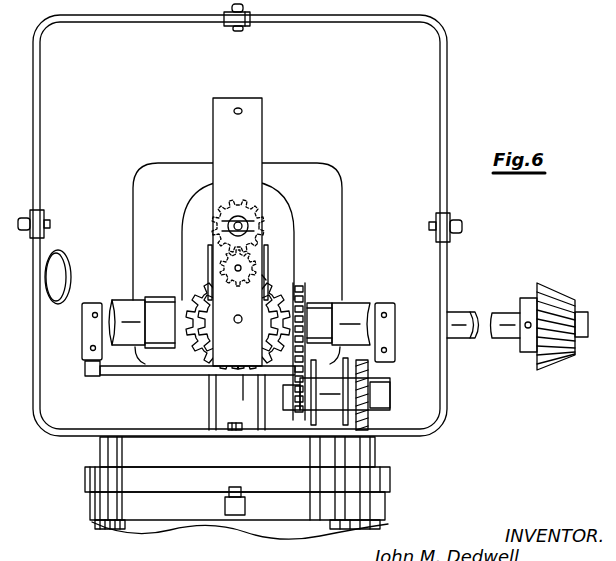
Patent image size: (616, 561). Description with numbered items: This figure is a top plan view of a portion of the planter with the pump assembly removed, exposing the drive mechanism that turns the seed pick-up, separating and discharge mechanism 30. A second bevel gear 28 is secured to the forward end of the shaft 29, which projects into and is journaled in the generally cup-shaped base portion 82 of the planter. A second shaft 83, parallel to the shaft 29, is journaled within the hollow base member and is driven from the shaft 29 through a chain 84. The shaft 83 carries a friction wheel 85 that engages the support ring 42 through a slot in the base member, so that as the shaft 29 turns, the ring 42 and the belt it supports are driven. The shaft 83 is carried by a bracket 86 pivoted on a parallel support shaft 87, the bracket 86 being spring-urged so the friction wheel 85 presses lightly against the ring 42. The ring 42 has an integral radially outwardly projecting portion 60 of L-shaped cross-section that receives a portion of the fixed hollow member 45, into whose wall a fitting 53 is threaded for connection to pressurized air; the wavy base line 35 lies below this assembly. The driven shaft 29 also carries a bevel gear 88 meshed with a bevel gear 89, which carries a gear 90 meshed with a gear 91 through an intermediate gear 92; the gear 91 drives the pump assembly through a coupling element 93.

The base portion 82 is at (440, 98).
The coupling element 93 is at (238, 215).
The gear 91 is at (218, 214).
The intermediate gear 92 is at (222, 270).
The gear 90 is at (265, 287).
The bevel gear 89 is at (273, 292).
The bevel gear 88 is at (190, 302).
The support shaft 87 is at (205, 373).
The chain 84 is at (310, 297).
The bracket 86 is at (335, 392).
The second shaft 83 is at (392, 398).
The friction wheel 85 is at (366, 417).
The support ring 42 is at (120, 452).
The radially outwardly projecting portion 60 is at (95, 478).
The hollow member 45 is at (115, 500).
The base 35 is at (160, 524).
The fitting 53 is at (237, 512).
The seed pick-up, separating and discharge mechanism 30 is at (400, 510).
The shaft 29 is at (460, 318).
The second bevel gear 28 is at (548, 288).